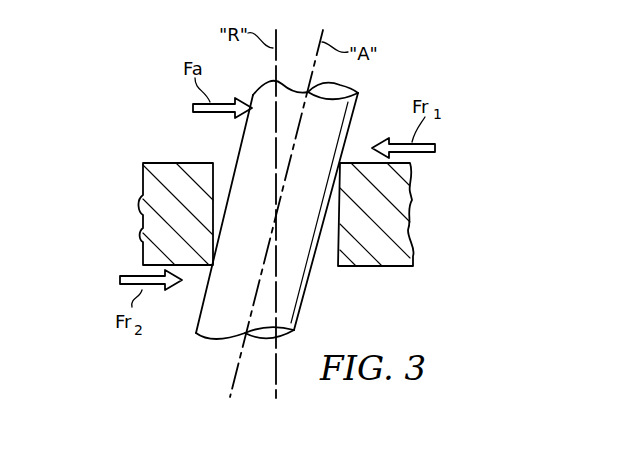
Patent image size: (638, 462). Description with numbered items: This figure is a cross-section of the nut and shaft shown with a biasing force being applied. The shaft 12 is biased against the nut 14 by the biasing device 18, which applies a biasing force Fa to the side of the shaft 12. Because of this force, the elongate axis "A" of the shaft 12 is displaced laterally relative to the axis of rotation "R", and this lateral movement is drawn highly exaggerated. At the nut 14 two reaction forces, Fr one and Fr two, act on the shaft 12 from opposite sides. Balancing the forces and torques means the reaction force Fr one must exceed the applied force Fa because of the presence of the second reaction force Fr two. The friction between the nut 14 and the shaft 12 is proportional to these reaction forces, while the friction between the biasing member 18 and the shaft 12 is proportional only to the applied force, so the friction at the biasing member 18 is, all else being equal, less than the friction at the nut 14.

The shaft 12 is at (314, 286).
The nut 14 is at (140, 216).
The biasing device 18 is at (163, 108).